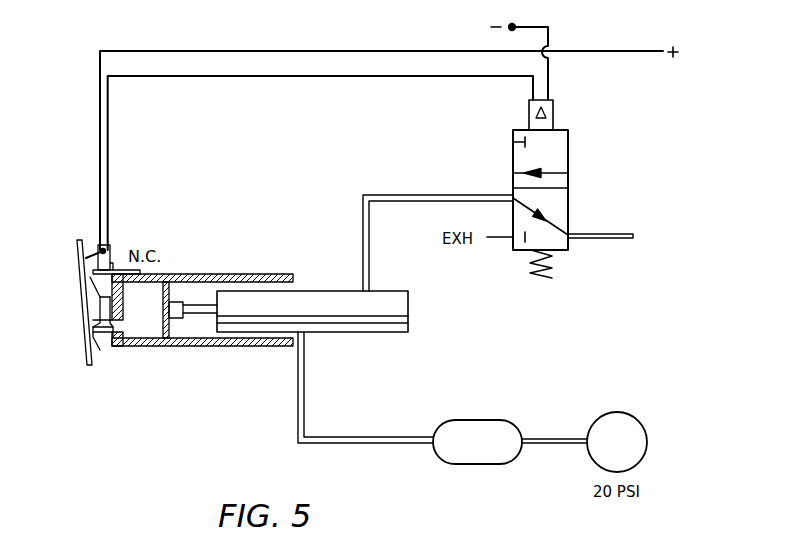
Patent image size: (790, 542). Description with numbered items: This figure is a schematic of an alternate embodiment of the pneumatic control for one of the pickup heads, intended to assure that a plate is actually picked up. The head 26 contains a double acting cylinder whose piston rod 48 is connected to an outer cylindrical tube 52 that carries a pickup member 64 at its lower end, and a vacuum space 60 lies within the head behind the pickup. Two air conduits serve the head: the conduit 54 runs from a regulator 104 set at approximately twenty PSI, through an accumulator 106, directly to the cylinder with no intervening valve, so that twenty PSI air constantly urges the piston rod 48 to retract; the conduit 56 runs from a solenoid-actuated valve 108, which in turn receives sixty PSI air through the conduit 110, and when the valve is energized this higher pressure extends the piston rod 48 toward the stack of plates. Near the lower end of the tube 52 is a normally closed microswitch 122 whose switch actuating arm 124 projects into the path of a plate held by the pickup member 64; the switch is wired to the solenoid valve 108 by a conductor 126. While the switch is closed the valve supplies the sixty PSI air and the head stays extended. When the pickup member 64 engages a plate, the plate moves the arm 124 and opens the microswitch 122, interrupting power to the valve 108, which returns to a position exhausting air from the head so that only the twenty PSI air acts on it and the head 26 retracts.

The head 26 is at (396, 334).
The piston rod 48 is at (200, 308).
The outer cylindrical tube 52 is at (235, 347).
The conduit 54 is at (390, 437).
The conduit 56 is at (437, 195).
The vacuum space 60 is at (145, 300).
The pickup member 64 is at (97, 357).
The regulator 104 is at (643, 423).
The accumulator 106 is at (507, 420).
The solenoid-actuated valve 108 is at (568, 145).
The conduit 110 is at (607, 234).
The microswitch 122 is at (100, 250).
The switch actuating arm 124 is at (85, 252).
The conductor 126 is at (288, 77).